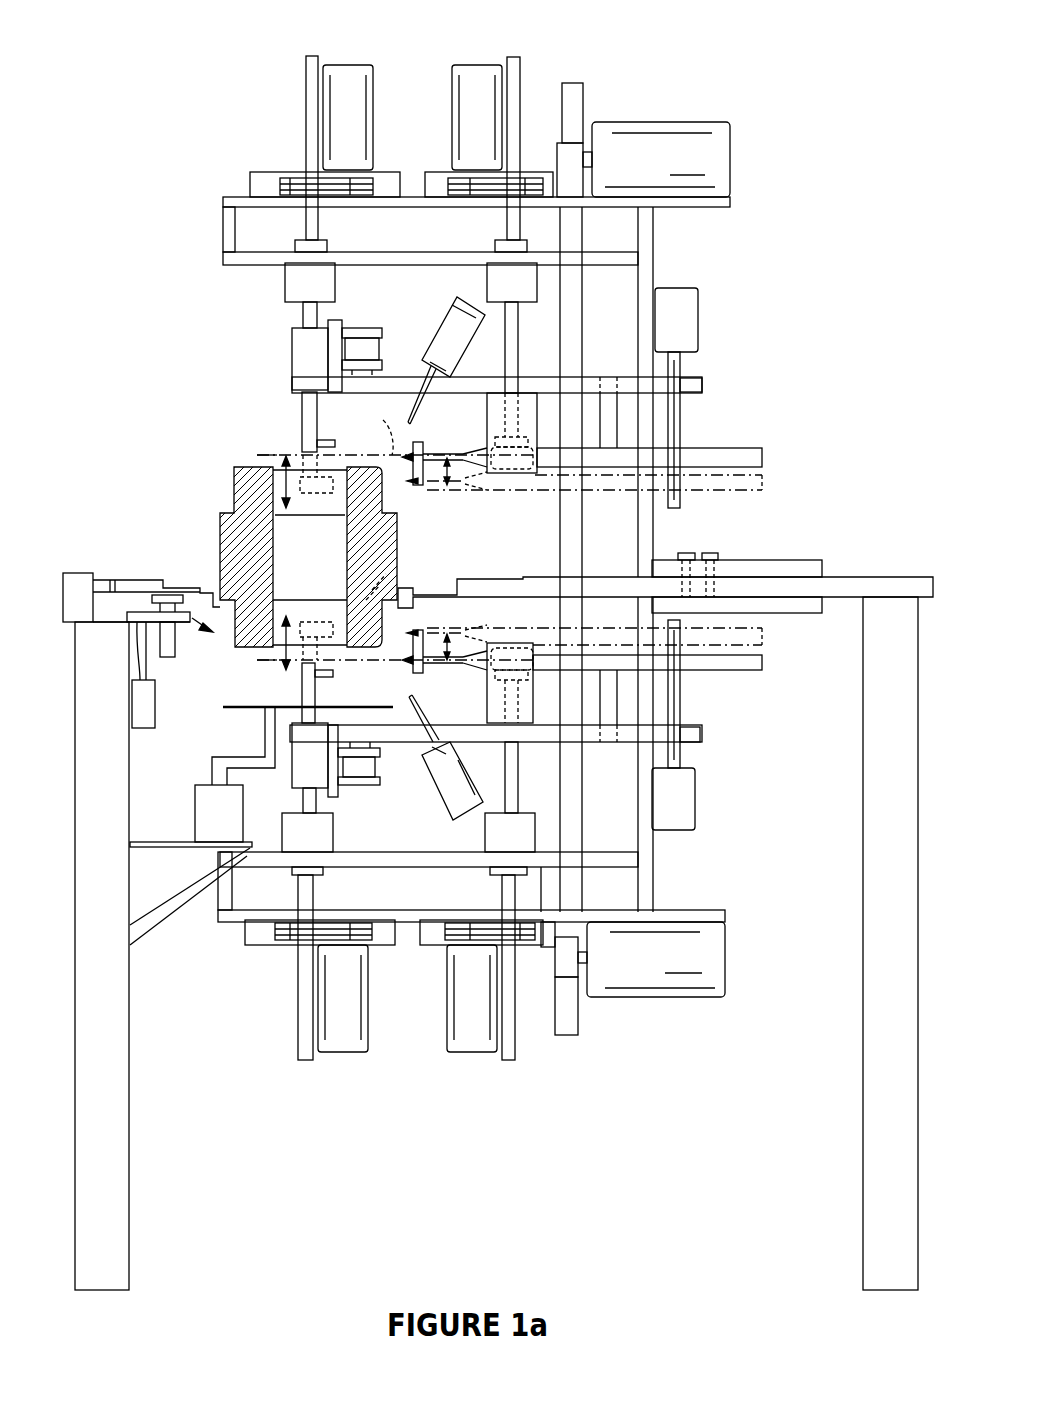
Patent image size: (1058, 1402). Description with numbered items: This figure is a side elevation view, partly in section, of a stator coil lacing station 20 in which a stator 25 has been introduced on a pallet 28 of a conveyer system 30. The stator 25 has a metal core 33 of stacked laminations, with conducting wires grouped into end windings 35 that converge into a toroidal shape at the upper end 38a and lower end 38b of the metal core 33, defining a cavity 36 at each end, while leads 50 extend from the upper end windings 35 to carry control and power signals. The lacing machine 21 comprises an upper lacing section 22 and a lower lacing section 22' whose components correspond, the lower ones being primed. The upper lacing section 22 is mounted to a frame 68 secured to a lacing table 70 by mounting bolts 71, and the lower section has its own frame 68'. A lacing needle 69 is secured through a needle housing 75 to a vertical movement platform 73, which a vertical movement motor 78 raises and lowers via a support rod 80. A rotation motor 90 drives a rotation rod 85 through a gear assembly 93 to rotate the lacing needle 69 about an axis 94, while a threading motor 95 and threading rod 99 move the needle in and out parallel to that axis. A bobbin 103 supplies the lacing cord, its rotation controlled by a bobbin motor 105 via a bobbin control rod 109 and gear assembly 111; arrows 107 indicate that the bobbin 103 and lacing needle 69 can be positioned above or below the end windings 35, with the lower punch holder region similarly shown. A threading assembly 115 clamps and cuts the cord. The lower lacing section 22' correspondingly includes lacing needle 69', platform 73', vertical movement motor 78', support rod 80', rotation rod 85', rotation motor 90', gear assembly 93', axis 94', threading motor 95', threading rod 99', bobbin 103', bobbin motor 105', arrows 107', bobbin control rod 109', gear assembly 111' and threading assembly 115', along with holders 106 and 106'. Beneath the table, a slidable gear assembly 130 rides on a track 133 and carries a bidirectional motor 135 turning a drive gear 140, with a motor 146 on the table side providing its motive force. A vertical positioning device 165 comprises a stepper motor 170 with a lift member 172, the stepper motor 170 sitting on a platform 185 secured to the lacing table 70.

The stator coil lacing station 20 is at (788, 152).
The lacing machine 21 is at (708, 268).
The upper lacing section 22 is at (808, 353).
The lower lacing section 22' is at (808, 716).
The stator 25 is at (225, 452).
The pallet 28 is at (508, 561).
The conveyer system 30 is at (73, 560).
The metal core 33 is at (220, 530).
The end windings 35 is at (248, 465).
The cavity 36 is at (275, 460).
The upper end 38a is at (408, 519).
The lower end 38b is at (402, 614).
The leads 50 is at (233, 473).
The frame 68 is at (690, 392).
The frame 68' is at (681, 754).
The lacing needle 69 is at (444, 448).
The lacing needle 69' is at (444, 665).
The lacing table 70 is at (845, 590).
The mounting bolts 71 is at (690, 555).
The vertical movement platform 73 is at (717, 369).
The vertical movement platform 73' is at (721, 724).
The needle housing 75 is at (537, 420).
The vertical movement motor 78 is at (661, 128).
The vertical movement motor 78' is at (691, 959).
The support rod 80 is at (595, 122).
The support rod 80' is at (597, 1001).
The rotation rod 85 is at (531, 211).
The rotation rod 85' is at (542, 990).
The rotation motor 90 is at (465, 86).
The rotation motor 90' is at (476, 1027).
The gear assembly 93 is at (492, 146).
The gear assembly 93' is at (473, 969).
The axis 94 is at (385, 425).
The axis 94' is at (399, 577).
The threading motor 95 is at (718, 320).
The threading motor 95' is at (708, 799).
The threading rod 99 is at (710, 430).
The threading rod 99' is at (711, 694).
The bobbin 103 is at (279, 414).
The bobbin 103' is at (372, 764).
The bobbin motor 105 is at (340, 254).
The bobbin motor 105' is at (348, 888).
The upper punch holder 106 is at (294, 355).
The lower punch holder 106' is at (312, 766).
The arrows 107 is at (407, 510).
The arrows 107' is at (413, 605).
The bobbin control rod 109 is at (271, 154).
The bobbin control rod 109' is at (270, 980).
The gear assembly 111 is at (300, 170).
The gear assembly 111' is at (305, 950).
The threading assembly 115 is at (437, 354).
The threading assembly 115' is at (430, 770).
The slidable gear assembly 130 is at (214, 633).
The track 133 is at (140, 630).
The bidirectional motor 135 is at (170, 657).
The drive gear 140 is at (168, 598).
The motor 146 is at (140, 735).
The vertical positioning device 165 is at (205, 745).
The stepper motor 170 is at (195, 812).
The lift member 172 is at (268, 718).
The platform 185 is at (237, 858).